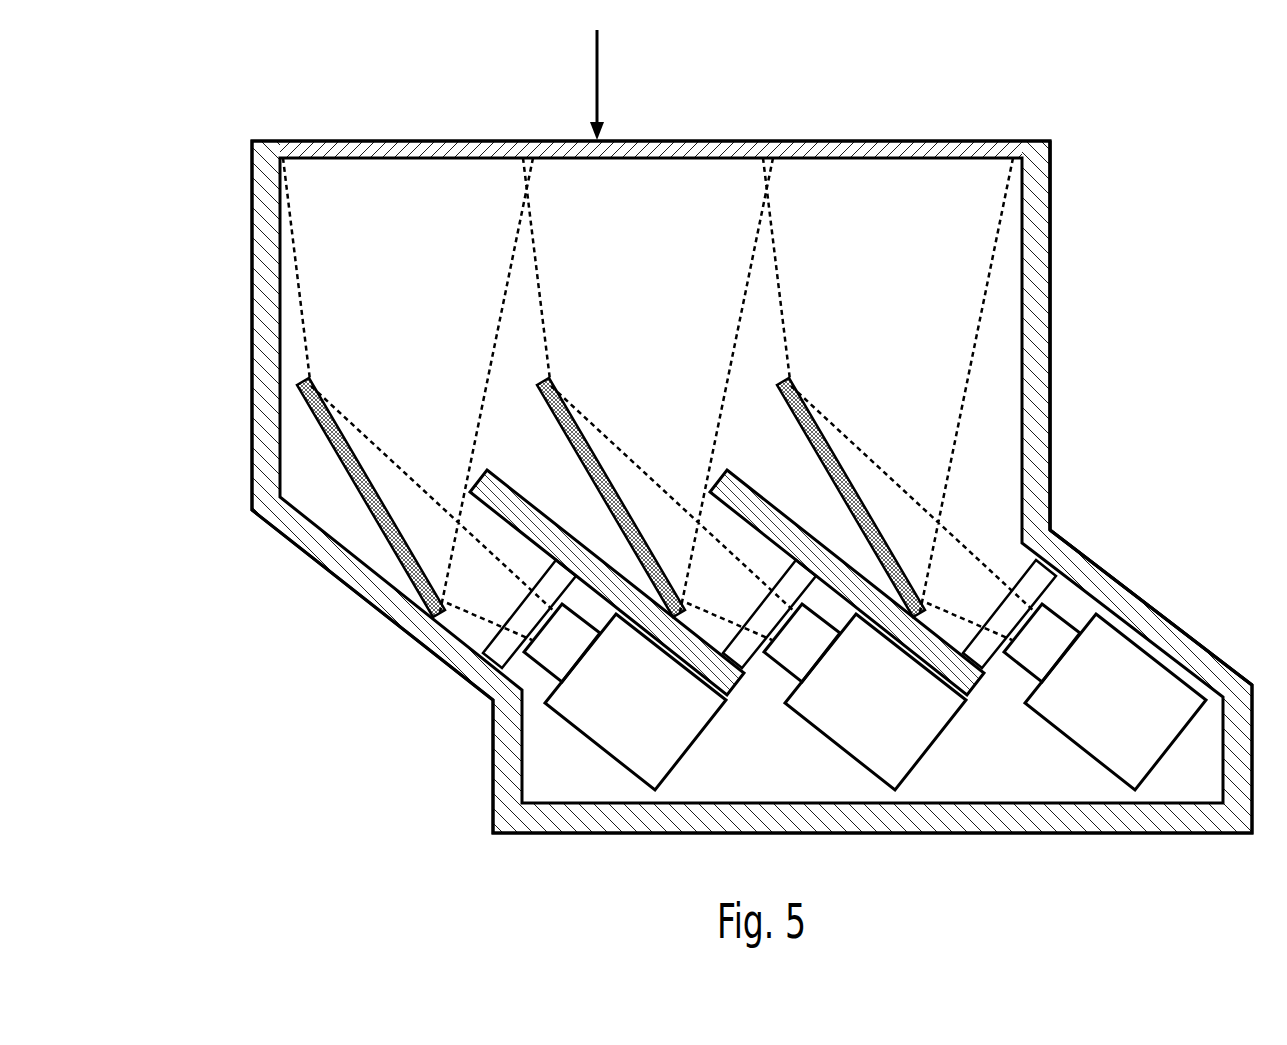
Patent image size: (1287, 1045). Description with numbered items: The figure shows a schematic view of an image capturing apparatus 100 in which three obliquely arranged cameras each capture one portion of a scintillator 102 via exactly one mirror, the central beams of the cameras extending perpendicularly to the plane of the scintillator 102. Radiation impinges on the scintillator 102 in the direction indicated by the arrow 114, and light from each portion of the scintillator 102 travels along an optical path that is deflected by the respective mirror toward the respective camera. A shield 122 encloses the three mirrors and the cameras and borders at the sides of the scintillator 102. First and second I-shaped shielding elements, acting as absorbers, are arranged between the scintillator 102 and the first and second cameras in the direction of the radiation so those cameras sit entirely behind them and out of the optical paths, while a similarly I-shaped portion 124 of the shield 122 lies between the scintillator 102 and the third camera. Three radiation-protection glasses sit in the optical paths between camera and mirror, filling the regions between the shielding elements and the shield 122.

The image capturing apparatus 100 is at (1240, 64).
The scintillator 102 is at (973, 140).
The arrow 114 is at (597, 75).
The shield 122 is at (1050, 280).
The portion of the shield 124 is at (1152, 583).